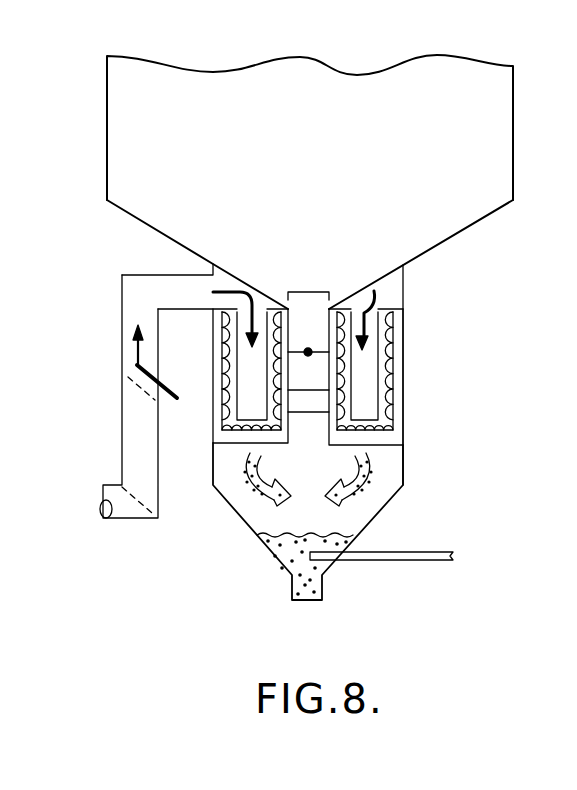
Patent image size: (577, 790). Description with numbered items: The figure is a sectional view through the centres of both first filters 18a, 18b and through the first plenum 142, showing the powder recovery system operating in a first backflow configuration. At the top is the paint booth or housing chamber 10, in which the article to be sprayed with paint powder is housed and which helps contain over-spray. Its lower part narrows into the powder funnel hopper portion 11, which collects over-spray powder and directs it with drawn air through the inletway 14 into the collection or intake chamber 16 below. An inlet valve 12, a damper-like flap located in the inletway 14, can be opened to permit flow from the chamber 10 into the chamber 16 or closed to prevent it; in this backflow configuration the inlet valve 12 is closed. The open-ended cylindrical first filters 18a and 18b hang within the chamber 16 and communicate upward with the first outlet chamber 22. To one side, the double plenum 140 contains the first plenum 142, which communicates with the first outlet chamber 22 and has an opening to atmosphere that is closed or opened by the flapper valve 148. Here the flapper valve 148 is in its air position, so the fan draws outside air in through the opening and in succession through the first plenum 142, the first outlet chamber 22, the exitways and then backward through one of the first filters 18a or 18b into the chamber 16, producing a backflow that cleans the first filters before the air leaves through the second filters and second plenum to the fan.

The paint booth or housing chamber 10 is at (323, 164).
The powder funnel hopper portion 11 is at (422, 253).
The inlet valve 12 is at (297, 348).
The inletway 14 is at (308, 380).
The collection or intake chamber 16 is at (320, 470).
The first filter 18a is at (225, 318).
The first filter 18b is at (383, 363).
The first outlet chamber 22 is at (228, 283).
The double plenum 140 is at (121, 423).
The first plenum 142 is at (133, 468).
The flapper valve 148 is at (127, 378).